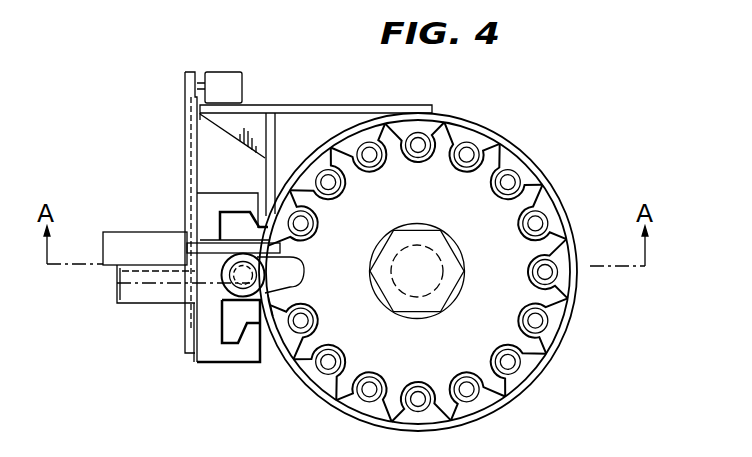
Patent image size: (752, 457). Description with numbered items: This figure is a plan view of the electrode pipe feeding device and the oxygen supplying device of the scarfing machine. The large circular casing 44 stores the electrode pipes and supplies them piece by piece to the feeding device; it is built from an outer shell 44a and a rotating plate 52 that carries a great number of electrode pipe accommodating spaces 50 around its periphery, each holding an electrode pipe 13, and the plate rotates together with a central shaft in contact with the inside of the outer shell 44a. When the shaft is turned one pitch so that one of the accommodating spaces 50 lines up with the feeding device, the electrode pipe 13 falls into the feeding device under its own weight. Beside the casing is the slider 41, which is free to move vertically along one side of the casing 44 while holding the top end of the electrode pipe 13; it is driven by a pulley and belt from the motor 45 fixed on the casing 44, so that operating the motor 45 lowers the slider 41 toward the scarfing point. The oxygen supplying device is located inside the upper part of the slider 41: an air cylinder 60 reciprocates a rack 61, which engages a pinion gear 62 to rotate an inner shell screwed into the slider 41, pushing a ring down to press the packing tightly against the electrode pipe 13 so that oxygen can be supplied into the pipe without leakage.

The electrode pipe 13 is at (320, 370).
The slider 41 is at (200, 358).
The casing 44 is at (428, 278).
The outer shell 44a is at (498, 407).
The motor 45 is at (229, 74).
The electrode pipe accommodating spaces 50 is at (288, 268).
The rotating plate 52 is at (295, 353).
The air cylinder 60 is at (128, 233).
The rack 61 is at (197, 240).
The pinion gear 62 is at (262, 283).